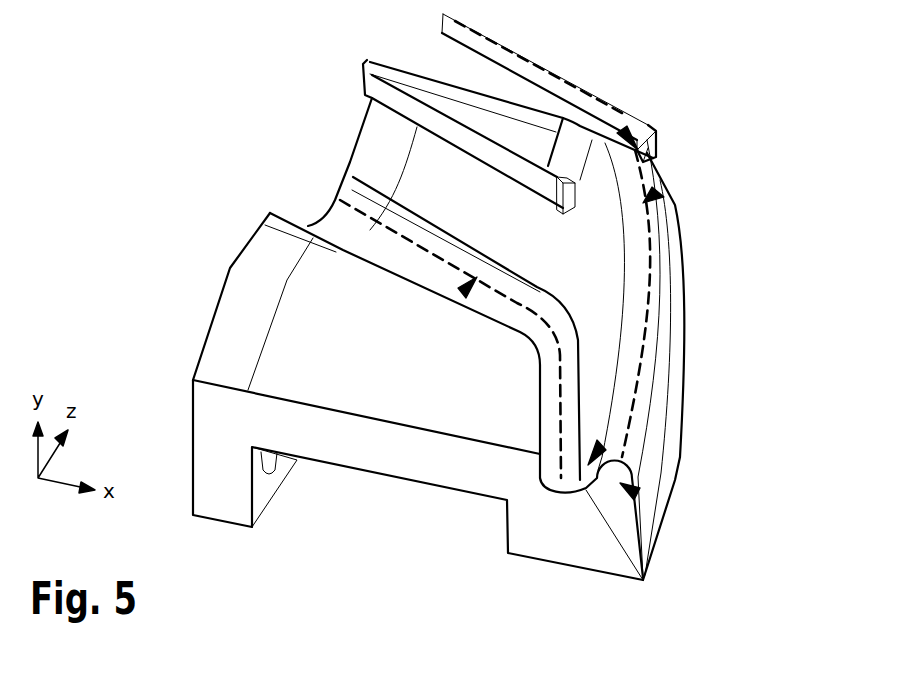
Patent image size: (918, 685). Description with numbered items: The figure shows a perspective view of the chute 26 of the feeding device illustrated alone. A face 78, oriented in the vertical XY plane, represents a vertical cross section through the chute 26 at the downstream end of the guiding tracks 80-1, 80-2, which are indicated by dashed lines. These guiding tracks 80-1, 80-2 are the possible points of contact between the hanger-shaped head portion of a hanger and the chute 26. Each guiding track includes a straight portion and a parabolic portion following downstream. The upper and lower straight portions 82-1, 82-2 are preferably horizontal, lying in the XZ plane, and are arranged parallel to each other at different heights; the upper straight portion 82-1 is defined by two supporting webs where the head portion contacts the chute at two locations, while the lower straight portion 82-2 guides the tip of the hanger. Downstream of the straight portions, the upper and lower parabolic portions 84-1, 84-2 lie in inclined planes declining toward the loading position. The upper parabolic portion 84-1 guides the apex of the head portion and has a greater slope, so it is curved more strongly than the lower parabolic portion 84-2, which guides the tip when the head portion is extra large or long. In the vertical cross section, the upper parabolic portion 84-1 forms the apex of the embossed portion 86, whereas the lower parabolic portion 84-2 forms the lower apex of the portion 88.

The chute 26 is at (243, 110).
The face 78 is at (236, 437).
The upper straight guiding-track portion 82-1 is at (661, 126).
The lower straight guiding-track portion 82-2 is at (527, 279).
The guiding track 80-1 is at (670, 184).
The guiding track 80-2 is at (460, 300).
The upper parabolic guiding-track portion 84-1 is at (690, 477).
The lower parabolic guiding-track portion 84-2 is at (537, 327).
The embossed cross-sectional portion 86 is at (640, 497).
The cross-sectional portion 88 is at (596, 440).